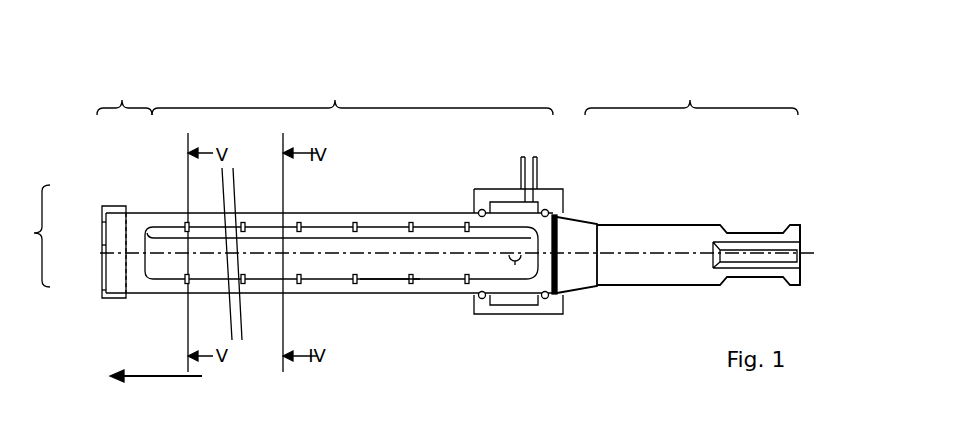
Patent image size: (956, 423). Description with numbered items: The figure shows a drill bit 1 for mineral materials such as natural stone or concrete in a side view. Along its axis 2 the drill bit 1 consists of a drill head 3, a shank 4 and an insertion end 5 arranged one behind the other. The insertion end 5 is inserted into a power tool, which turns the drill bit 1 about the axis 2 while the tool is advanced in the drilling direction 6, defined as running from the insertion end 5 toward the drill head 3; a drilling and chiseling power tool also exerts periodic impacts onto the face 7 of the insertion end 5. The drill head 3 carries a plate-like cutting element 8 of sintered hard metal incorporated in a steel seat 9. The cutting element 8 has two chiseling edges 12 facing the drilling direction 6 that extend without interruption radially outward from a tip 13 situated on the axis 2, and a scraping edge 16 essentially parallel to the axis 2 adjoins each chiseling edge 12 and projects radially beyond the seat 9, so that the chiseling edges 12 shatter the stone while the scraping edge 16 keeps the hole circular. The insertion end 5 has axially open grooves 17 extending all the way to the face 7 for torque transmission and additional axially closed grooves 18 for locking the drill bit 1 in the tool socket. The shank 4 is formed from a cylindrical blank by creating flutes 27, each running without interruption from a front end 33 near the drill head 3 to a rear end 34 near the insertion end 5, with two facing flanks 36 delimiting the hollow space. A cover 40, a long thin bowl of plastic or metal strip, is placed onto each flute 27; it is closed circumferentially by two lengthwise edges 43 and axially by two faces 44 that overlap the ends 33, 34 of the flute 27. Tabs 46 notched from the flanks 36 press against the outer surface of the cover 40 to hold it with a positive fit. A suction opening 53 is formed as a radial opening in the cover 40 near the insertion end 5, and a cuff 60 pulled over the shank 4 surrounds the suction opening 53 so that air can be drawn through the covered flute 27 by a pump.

The drill bit 1 is at (170, 64).
The axis 2 is at (655, 254).
The drill head 3 is at (124, 90).
The shank 4 is at (352, 93).
The insertion end 5 is at (691, 94).
The drilling direction 6 is at (165, 379).
The face 7 is at (806, 272).
The cutting element 8 is at (32, 236).
The seat 9 is at (116, 238).
The chiseling edge 12 is at (100, 230).
The tip 13 is at (102, 255).
The scraping edge 16 is at (104, 291).
The axially open grooves 17 is at (727, 250).
The axially closed grooves 18 is at (766, 232).
The flute 27 is at (383, 249).
The front end 33 is at (144, 231).
The rear end 34 is at (533, 246).
The flank 36 is at (337, 233).
The cover 40 is at (388, 271).
The lengthwise edge 43 is at (340, 294).
The face 44 is at (136, 294).
The tab 46 is at (242, 270).
The suction opening 53 is at (515, 263).
The cuff 60 is at (515, 411).